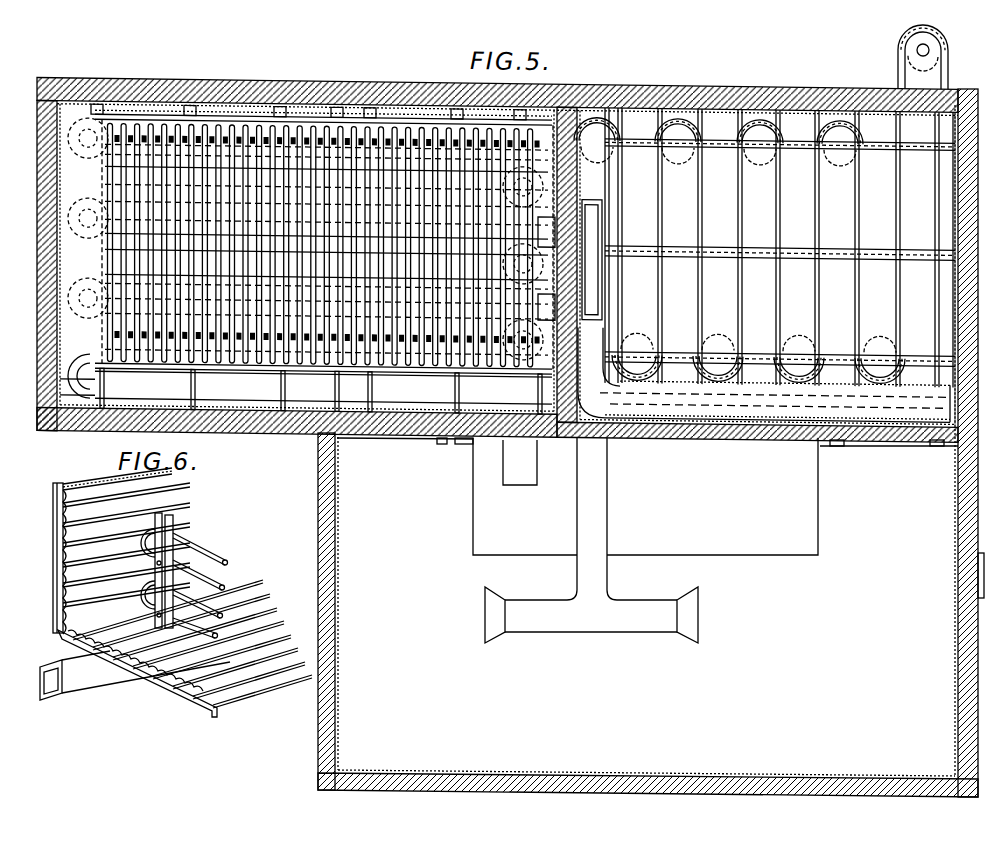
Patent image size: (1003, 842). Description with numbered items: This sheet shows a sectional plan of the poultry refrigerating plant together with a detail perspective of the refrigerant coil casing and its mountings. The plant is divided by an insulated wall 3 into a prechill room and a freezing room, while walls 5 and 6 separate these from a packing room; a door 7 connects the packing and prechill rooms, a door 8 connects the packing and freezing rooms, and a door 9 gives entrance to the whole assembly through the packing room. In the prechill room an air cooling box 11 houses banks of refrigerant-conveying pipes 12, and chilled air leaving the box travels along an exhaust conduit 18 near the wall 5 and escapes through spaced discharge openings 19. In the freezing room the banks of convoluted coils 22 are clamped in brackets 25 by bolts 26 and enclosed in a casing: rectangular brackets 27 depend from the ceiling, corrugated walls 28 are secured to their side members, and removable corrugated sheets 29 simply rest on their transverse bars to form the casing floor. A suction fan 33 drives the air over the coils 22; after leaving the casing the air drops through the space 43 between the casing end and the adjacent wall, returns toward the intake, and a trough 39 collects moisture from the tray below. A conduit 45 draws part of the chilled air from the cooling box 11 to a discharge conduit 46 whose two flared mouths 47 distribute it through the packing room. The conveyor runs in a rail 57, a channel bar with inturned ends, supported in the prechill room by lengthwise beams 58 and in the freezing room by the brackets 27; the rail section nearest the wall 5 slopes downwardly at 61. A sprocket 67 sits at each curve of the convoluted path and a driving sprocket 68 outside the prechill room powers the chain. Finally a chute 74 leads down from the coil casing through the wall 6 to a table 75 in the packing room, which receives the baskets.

In FIG. 5, the insulated wall 3 is at (599, 373).
In FIG. 5, the wall 5 is at (497, 259).
In FIG. 5, the wall 6 is at (468, 444).
In FIG. 5, the door 7 is at (878, 447).
In FIG. 5, the door 8 is at (418, 440).
In FIG. 5, the door 9 is at (980, 598).
In FIG. 5, the air cooling box 11 is at (603, 286).
In FIG. 5, the refrigerant-conveying pipes 12 is at (600, 219).
In FIG. 5, the exhaust conduit 18 is at (754, 385).
In FIG. 5, the discharge openings 19 is at (838, 384).
In FIG. 5, the convoluted coils 22 is at (123, 254).
In FIG. 6, the convoluted coils 22 is at (226, 581).
In FIG. 5, the bracket 25 is at (106, 143).
In FIG. 6, the bracket 25 is at (180, 516).
In FIG. 6, the bolts 26 is at (190, 539).
In FIG. 5, the rectangular brackets 27 is at (193, 112).
In FIG. 6, the rectangular brackets 27 is at (53, 592).
In FIG. 5, the walls 28 is at (148, 112).
In FIG. 6, the walls 28 is at (97, 484).
In FIG. 5, the sheets of corrugated metal 29 is at (75, 304).
In FIG. 6, the sheets of corrugated metal 29 is at (145, 676).
In FIG. 5, the suction fan 33 is at (548, 268).
In FIG. 5, the trough 39 is at (362, 437).
In FIG. 5, the space 43 is at (62, 243).
In FIG. 5, the conduit 45 is at (608, 482).
In FIG. 5, the discharge conduit 46 is at (550, 634).
In FIG. 5, the flared mouths 47 is at (485, 612).
In FIG. 5, the rail 57 is at (67, 207).
In FIG. 6, the rail 57 is at (92, 688).
In FIG. 5, the beams 58 is at (800, 131).
In FIG. 5, the sloping rail section 61 is at (337, 261).
In FIG. 5, the sprocket 67 is at (760, 152).
In FIG. 5, the driving sprocket 68 is at (935, 48).
In FIG. 5, the chute 74 is at (538, 462).
In FIG. 5, the table 75 is at (473, 507).